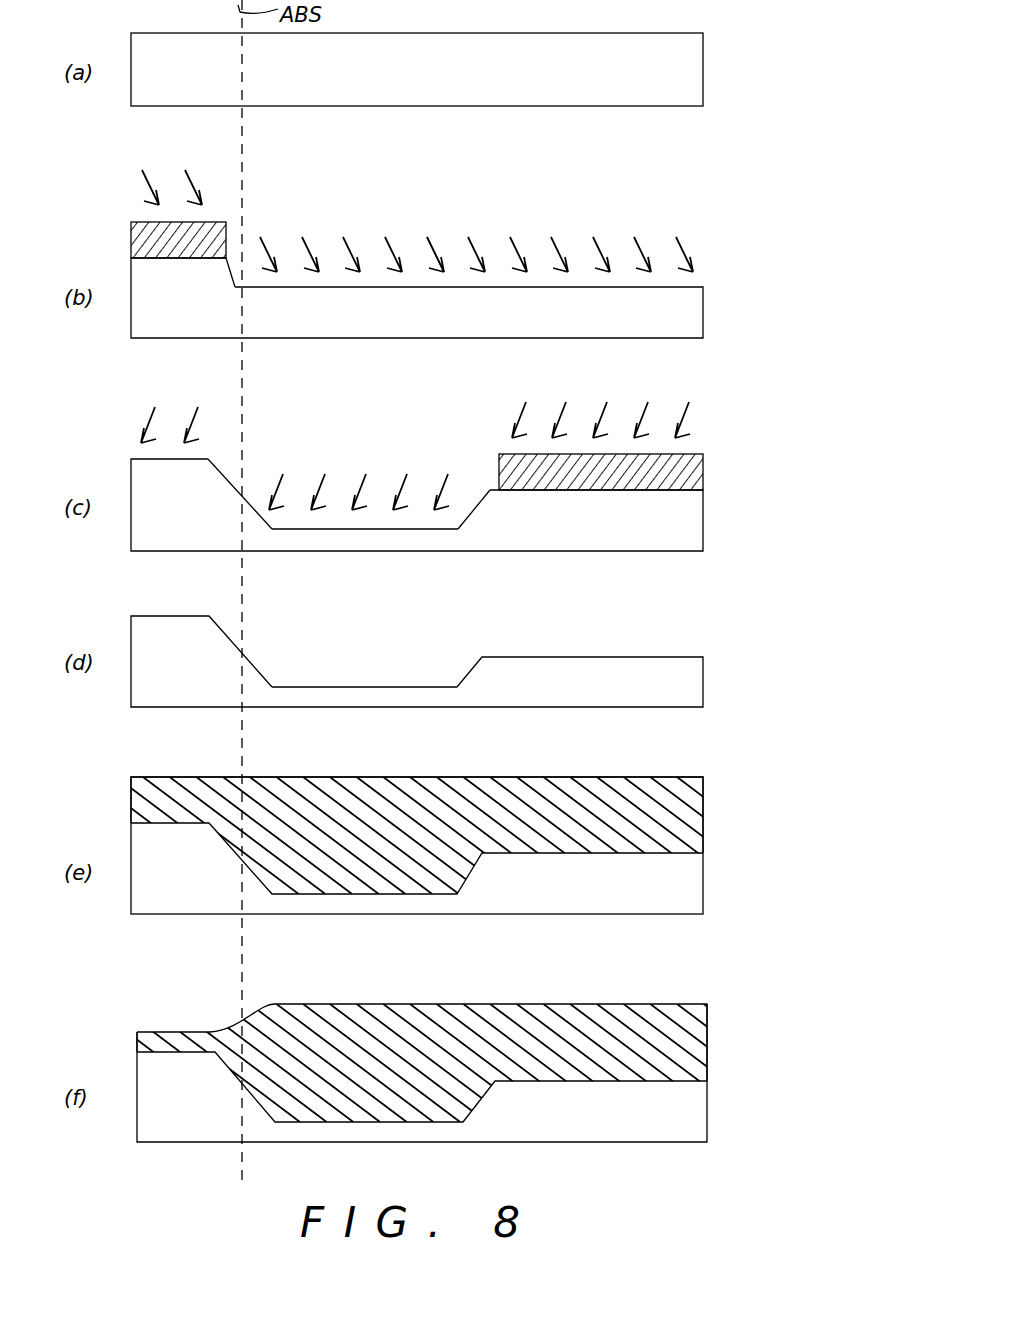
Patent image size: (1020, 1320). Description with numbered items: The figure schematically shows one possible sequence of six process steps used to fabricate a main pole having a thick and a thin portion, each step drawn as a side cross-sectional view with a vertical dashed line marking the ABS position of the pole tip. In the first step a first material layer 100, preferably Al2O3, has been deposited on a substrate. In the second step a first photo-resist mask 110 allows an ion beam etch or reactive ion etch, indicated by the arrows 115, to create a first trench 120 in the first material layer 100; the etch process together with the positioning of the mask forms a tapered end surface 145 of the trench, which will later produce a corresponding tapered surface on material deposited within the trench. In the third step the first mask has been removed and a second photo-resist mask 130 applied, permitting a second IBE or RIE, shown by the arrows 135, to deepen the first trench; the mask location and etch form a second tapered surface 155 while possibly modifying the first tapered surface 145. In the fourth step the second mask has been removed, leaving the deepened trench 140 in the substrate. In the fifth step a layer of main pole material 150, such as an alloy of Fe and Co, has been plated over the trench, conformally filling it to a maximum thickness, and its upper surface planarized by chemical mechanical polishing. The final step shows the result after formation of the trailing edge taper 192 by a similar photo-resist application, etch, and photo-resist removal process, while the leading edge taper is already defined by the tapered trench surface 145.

The first material layer 100 is at (684, 63).
The first photo-resist mask 110 is at (132, 240).
The ion beam etch or reactive ion etch 115 is at (431, 252).
The first trench 120 is at (371, 232).
The second photo-resist mask 130 is at (690, 472).
The second IBE or RIE process 135 is at (278, 478).
The deepened trench 140 is at (339, 518).
The tapered end surface 145 is at (233, 270).
The layer of main pole material 150 is at (692, 817).
The second tapered surface 155 is at (476, 500).
The curved surface 192 is at (253, 1020).